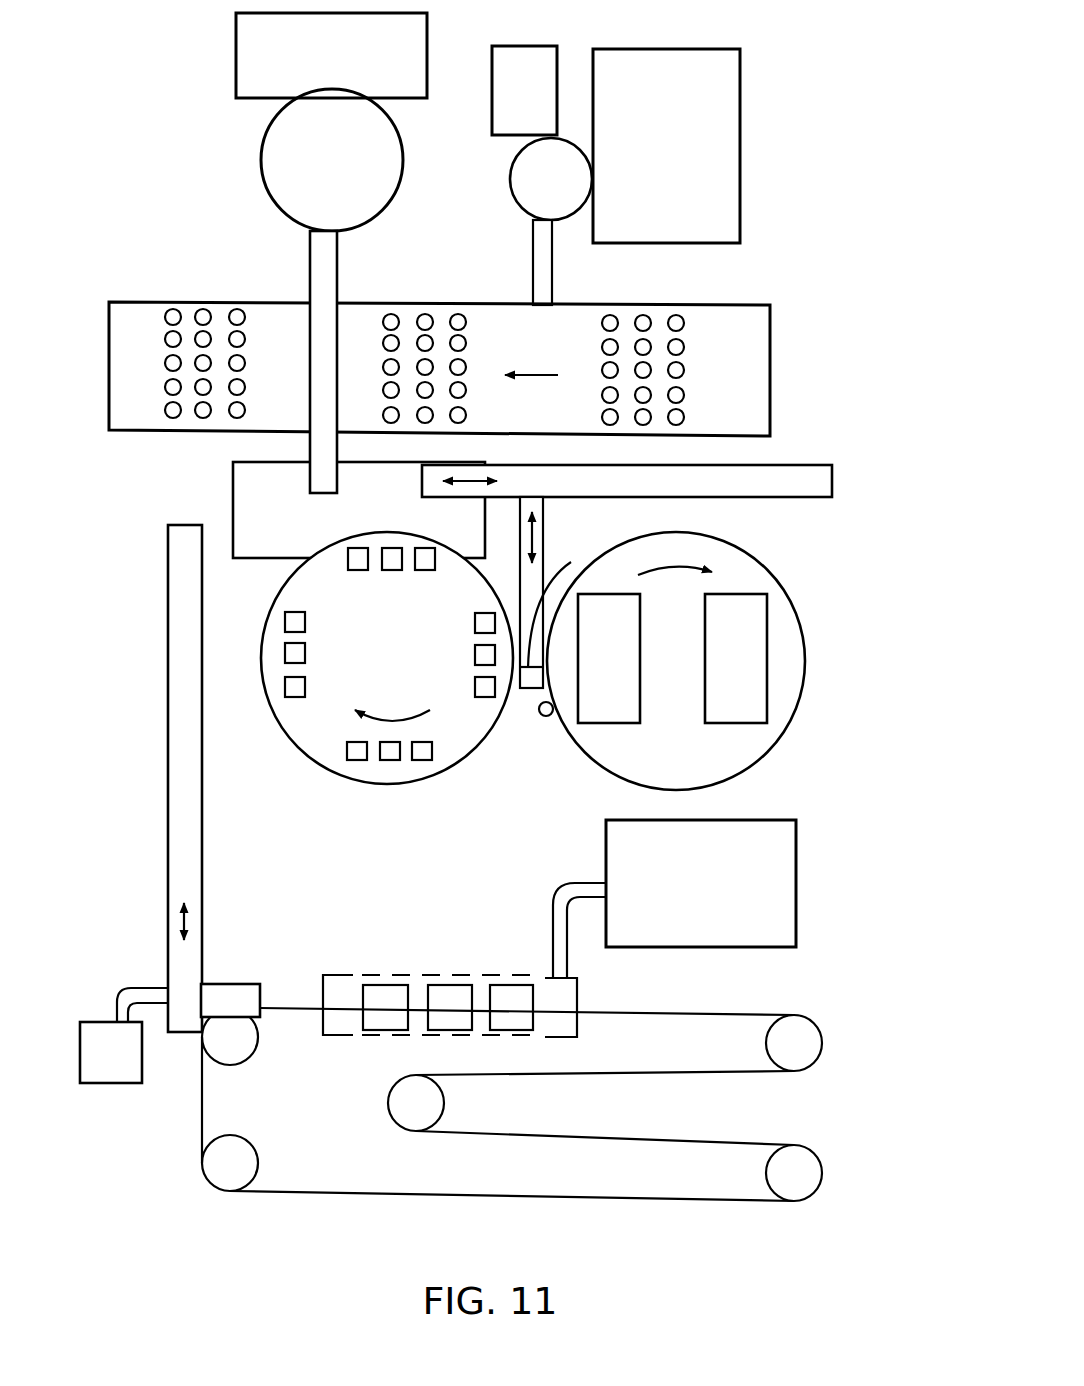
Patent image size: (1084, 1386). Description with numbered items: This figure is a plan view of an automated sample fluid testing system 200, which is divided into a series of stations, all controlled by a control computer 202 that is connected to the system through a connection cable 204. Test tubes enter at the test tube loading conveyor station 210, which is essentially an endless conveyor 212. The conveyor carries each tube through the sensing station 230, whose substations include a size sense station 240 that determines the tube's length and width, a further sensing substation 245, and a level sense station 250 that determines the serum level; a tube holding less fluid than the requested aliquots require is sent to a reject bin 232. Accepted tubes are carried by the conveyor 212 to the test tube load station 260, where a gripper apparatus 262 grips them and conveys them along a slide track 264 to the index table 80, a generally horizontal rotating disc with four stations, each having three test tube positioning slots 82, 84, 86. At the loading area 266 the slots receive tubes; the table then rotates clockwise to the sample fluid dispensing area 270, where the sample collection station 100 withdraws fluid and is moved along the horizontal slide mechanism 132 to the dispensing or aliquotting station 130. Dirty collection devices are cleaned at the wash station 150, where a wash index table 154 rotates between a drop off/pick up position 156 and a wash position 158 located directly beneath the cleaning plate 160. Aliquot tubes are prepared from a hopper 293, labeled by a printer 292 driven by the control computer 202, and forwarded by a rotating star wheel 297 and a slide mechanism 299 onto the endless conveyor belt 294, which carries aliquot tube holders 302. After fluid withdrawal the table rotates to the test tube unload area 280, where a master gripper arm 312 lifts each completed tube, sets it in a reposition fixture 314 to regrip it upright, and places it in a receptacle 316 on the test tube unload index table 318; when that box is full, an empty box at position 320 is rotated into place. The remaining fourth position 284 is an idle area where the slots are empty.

The wash station 150 is at (205, 125).
The cleaning plate 160 is at (303, 62).
The wash position 158 is at (332, 111).
The wash index table 154 is at (312, 174).
The drop off/pick up position 156 is at (332, 209).
The dispensing or aliquotting station 130 is at (213, 297).
The horizontal slide mechanism 132 is at (310, 447).
The hopper 293 is at (504, 102).
The printer 292 is at (636, 149).
The rotating star wheel 297 is at (527, 193).
The slide mechanism 299 is at (548, 265).
The endless conveyor belt 294 is at (487, 297).
The aliquot tube holders 302 is at (676, 320).
The sample collection station 100 is at (242, 482).
The sample fluid dispensing area 270 is at (373, 535).
The index table 80 is at (366, 662).
The test tube positioning slot 82 is at (420, 556).
The test tube positioning slot 84 is at (392, 565).
The test tube positioning slot 86 is at (356, 560).
The loading area 266 is at (286, 704).
The fourth position 284 is at (340, 738).
The test tube unload area 280 is at (478, 710).
The master gripper arm 312 is at (627, 576).
The reposition fixture 314 is at (548, 716).
The automated sample fluid testing system 200 is at (812, 728).
The receptacle 316 is at (590, 674).
The empty box position 320 is at (717, 674).
The test tube unload index table 318 is at (657, 772).
The slide track 264 is at (170, 826).
The test tube load station 260 is at (152, 985).
The gripper apparatus 262 is at (232, 998).
The reject bin 232 is at (91, 1066).
The sensing station 230 is at (340, 975).
The level sense station 250 is at (388, 992).
The second processing unit 245 is at (452, 993).
The size sense station 240 is at (511, 993).
The control computer 202 is at (679, 902).
The connection cable 204 is at (558, 903).
The test tube loading conveyor station 210 is at (820, 1107).
The endless conveyor 212 is at (625, 1073).